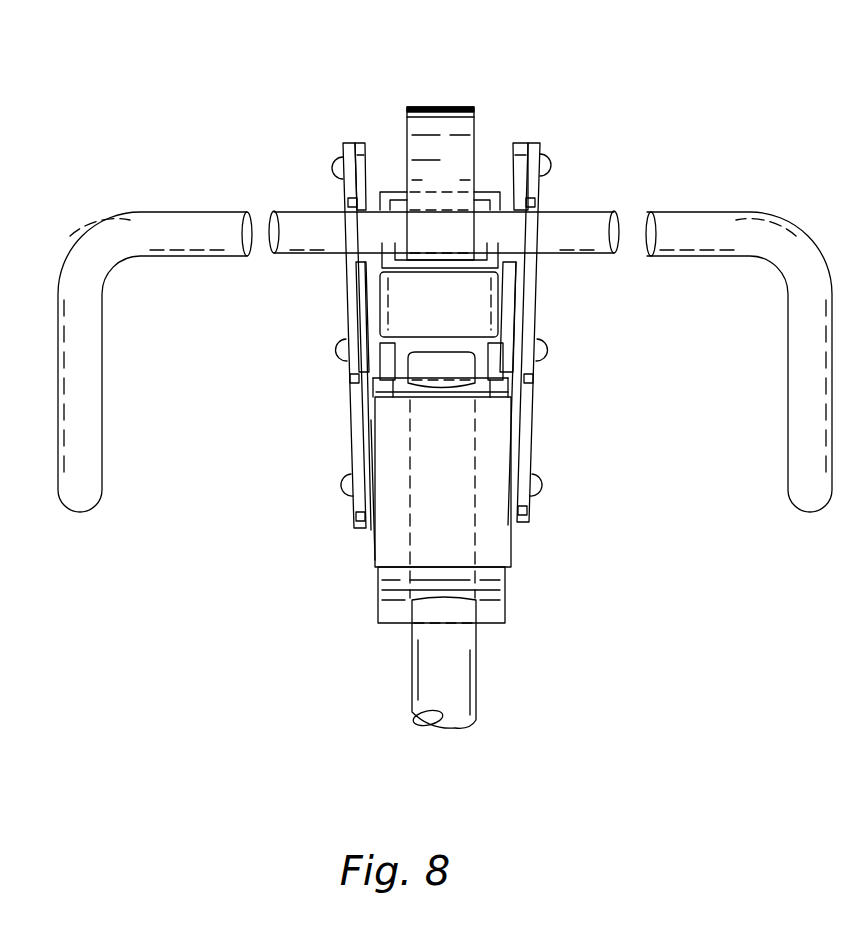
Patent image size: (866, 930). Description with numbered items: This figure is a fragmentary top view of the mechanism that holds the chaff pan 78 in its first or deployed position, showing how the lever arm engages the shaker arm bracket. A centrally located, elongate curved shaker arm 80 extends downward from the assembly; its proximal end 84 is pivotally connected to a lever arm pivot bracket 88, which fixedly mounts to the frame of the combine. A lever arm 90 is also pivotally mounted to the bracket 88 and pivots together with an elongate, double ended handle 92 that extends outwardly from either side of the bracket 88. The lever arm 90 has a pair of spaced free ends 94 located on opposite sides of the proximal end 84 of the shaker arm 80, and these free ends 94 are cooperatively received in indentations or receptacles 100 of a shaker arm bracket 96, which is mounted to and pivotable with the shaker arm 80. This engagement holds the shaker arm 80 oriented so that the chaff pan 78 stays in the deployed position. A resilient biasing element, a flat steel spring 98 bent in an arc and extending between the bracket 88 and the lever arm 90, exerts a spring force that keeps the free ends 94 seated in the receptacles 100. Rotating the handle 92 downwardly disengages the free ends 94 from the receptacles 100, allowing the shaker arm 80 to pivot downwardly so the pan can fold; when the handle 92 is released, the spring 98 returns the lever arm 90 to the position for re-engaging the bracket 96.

The chaff pan 78 is at (212, 633).
The shaker arm 80 is at (477, 712).
The proximal end 84 is at (467, 350).
The lever arm pivot bracket 88 is at (530, 440).
The lever arm 90 is at (382, 296).
The handle 92 is at (828, 498).
The free ends 94 is at (375, 398).
The shaker arm bracket 96 is at (507, 577).
The spring 98 is at (450, 105).
The receptacles 100 is at (394, 398).